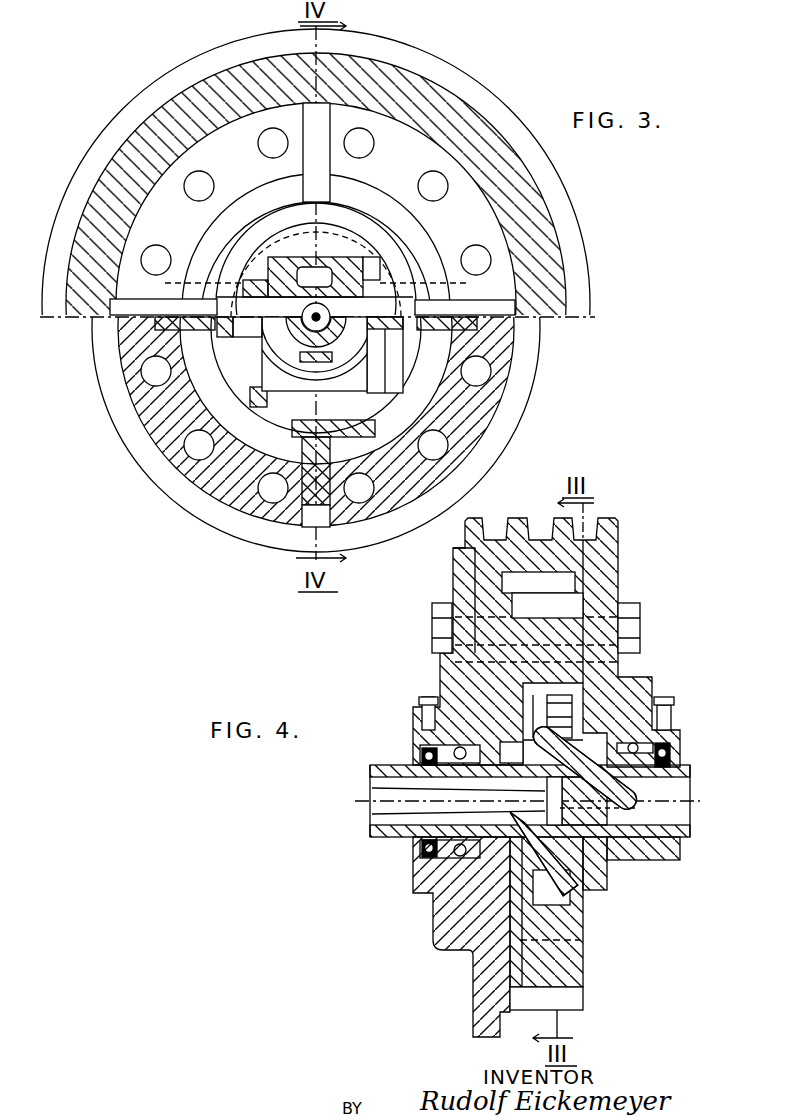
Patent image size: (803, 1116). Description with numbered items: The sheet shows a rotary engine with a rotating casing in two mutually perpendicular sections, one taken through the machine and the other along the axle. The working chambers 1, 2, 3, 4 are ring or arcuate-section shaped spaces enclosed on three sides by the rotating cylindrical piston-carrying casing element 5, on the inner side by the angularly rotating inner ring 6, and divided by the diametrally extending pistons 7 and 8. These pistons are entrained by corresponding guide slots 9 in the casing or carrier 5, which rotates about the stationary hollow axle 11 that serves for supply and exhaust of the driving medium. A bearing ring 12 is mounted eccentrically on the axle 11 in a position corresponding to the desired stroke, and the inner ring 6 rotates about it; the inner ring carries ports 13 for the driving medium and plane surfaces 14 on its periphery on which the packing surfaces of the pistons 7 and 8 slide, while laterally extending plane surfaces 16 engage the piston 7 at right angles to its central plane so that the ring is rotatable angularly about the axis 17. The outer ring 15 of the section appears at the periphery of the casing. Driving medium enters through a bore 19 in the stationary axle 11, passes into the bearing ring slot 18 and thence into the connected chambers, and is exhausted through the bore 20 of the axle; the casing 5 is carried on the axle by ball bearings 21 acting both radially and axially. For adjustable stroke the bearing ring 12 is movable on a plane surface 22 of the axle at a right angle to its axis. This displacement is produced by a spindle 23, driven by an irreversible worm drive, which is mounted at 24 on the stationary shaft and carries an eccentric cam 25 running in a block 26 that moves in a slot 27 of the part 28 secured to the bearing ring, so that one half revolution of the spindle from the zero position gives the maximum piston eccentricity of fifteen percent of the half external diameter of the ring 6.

In FIG. 3, the chamber 1 is at (374, 203).
In FIG. 3, the chamber 2 is at (316, 303).
In FIG. 3, the chamber 3 is at (250, 402).
In FIG. 3, the chamber 4 is at (363, 443).
In FIG. 3, the casing element 5 is at (316, 201).
In FIG. 4, the casing element 5 is at (607, 570).
In FIG. 3, the inner ring 6 is at (290, 210).
In FIG. 4, the inner ring 6 is at (540, 947).
In FIG. 3, the piston 7 is at (307, 138).
In FIG. 4, the piston 7 is at (520, 618).
In FIG. 3, the piston 8 is at (505, 318).
In FIG. 4, the piston 8 is at (500, 732).
In FIG. 3, the guide slot 9 is at (392, 44).
In FIG. 4, the guide slot 9 is at (545, 598).
In FIG. 3, the stationary axle 11 is at (314, 316).
In FIG. 4, the stationary axle 11 is at (665, 815).
In FIG. 3, the bearing ring 12 is at (298, 354).
In FIG. 4, the bearing ring 12 is at (548, 918).
In FIG. 3, the port 13 is at (230, 375).
In FIG. 3, the plane surface 14 is at (358, 200).
In FIG. 3, the outer ring 15 is at (215, 485).
In FIG. 3, the laterally extending plane surface 16 is at (415, 385).
In FIG. 3, the axis 17 is at (430, 348).
In FIG. 4, the bearing ring slot 18 is at (565, 708).
In FIG. 4, the bore 19 is at (372, 813).
In FIG. 4, the bore 20 is at (640, 700).
In FIG. 4, the ball bearing 21 is at (670, 740).
In FIG. 3, the plane surface 22 is at (395, 222).
In FIG. 4, the plane surface 22 is at (545, 890).
In FIG. 4, the spindle 23 is at (412, 792).
In FIG. 4, the mounting 24 is at (452, 750).
In FIG. 3, the eccentric cam 25 is at (270, 215).
In FIG. 4, the eccentric cam 25 is at (609, 812).
In FIG. 3, the block 26 is at (380, 255).
In FIG. 4, the block 26 is at (580, 817).
In FIG. 4, the slot 27 is at (560, 845).
In FIG. 3, the part 28 is at (420, 290).
In FIG. 4, the part 28 is at (562, 852).